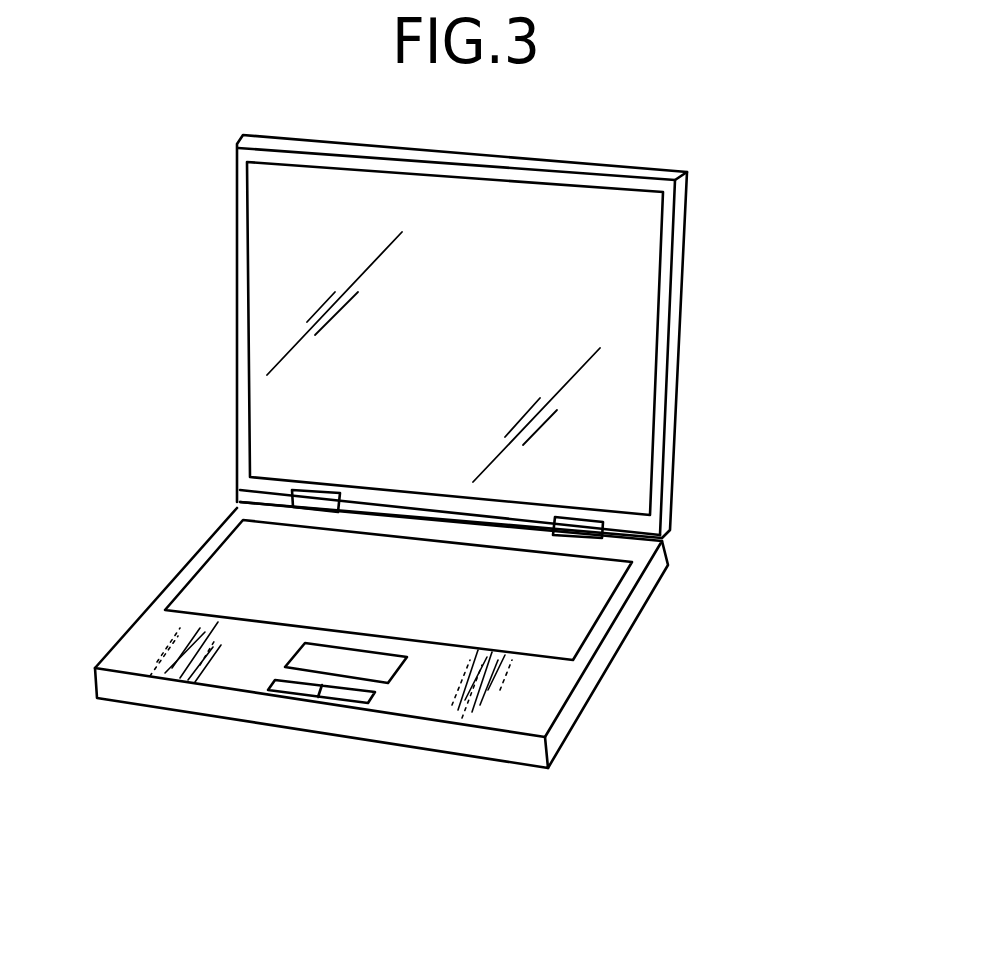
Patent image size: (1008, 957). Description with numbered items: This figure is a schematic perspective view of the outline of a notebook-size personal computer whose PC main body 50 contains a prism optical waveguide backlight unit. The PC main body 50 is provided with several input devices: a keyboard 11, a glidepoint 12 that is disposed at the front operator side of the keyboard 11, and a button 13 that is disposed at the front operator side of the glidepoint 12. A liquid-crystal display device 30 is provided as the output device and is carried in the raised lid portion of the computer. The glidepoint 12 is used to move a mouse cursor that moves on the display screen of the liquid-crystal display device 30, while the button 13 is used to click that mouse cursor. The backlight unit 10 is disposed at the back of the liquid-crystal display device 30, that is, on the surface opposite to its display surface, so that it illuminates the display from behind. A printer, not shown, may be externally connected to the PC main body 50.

The backlight unit 10 is at (680, 220).
The keyboard 11 is at (585, 590).
The glidepoint 12 is at (297, 655).
The button 13 is at (377, 697).
The liquid-crystal display device 30 is at (248, 250).
The PC main body 50 is at (467, 481).